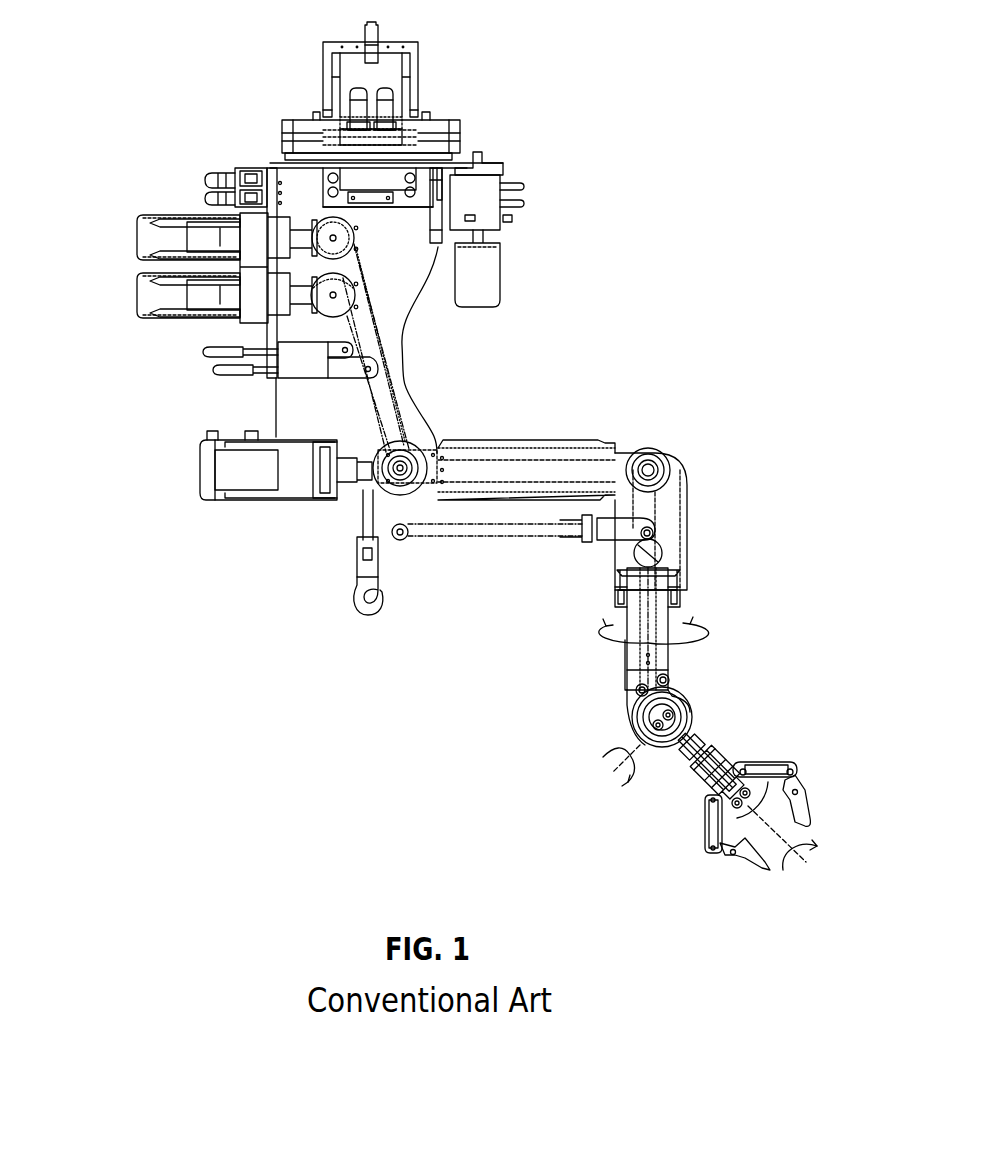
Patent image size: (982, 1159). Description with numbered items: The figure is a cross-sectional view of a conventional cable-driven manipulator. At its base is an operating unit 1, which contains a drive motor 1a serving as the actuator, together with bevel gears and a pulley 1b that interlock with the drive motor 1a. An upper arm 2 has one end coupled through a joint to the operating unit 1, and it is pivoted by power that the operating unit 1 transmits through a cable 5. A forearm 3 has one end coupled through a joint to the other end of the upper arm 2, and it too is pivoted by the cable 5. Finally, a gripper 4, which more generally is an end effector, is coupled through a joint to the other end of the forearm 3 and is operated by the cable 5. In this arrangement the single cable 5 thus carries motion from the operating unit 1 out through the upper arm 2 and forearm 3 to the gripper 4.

The operating unit 1 is at (473, 99).
The drive motor 1a is at (140, 210).
The pulley 1b is at (320, 213).
The upper arm 2 is at (570, 435).
The forearm 3 is at (692, 523).
The gripper 4 is at (784, 750).
The cable 5 is at (385, 352).